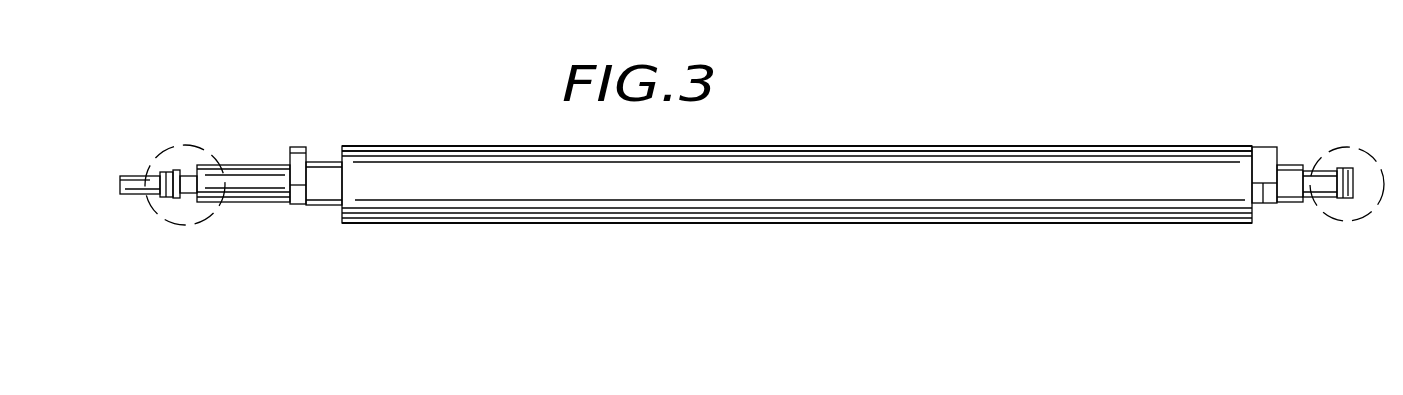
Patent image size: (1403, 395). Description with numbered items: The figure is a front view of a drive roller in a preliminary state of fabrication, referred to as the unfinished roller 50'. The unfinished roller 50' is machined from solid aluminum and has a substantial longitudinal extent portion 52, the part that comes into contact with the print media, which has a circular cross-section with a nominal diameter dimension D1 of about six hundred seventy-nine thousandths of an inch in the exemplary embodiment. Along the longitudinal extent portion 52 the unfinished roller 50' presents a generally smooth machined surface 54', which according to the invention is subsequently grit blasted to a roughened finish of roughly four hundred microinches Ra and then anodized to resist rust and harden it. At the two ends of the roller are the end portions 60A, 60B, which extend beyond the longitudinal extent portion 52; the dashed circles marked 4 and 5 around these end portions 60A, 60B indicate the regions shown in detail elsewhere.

The unfinished roller 50' is at (797, 145).
The longitudinal extent portion 52 is at (1252, 237).
The surface 54' is at (797, 130).
The left end shaft assembly 60A is at (263, 165).
The right end shaft assembly 60B is at (1291, 166).
The nominal diameter dimension D1 is at (420, 249).
The detail area of FIG. 4 is at (212, 219).
The detail area of FIG. 5 is at (1343, 225).